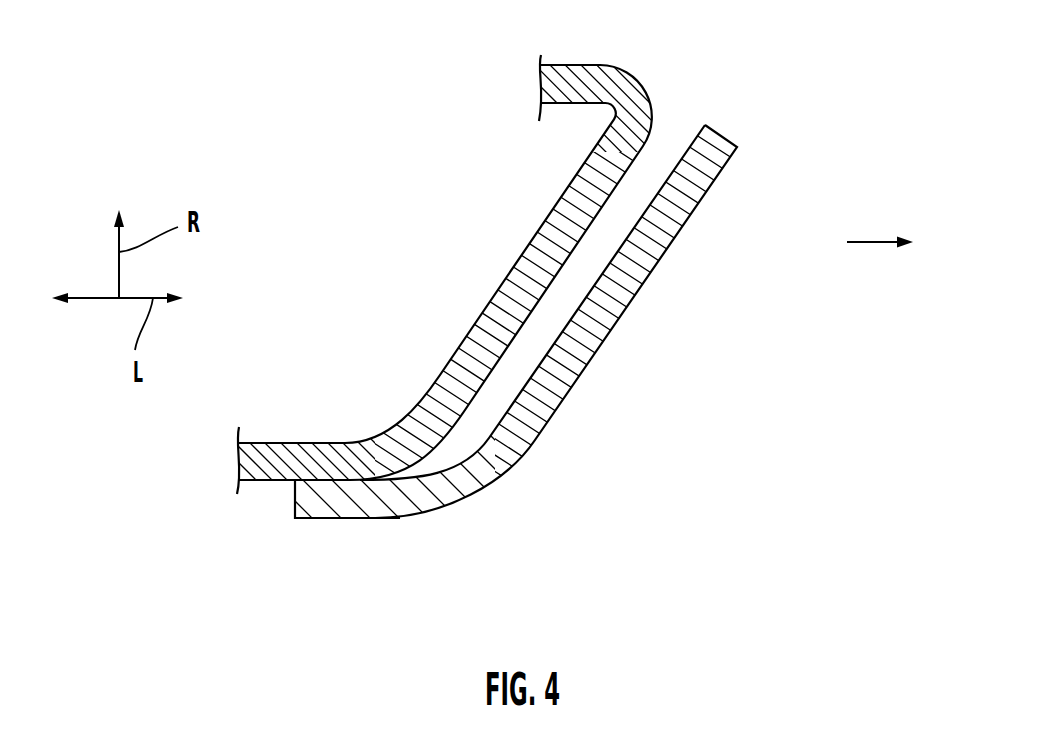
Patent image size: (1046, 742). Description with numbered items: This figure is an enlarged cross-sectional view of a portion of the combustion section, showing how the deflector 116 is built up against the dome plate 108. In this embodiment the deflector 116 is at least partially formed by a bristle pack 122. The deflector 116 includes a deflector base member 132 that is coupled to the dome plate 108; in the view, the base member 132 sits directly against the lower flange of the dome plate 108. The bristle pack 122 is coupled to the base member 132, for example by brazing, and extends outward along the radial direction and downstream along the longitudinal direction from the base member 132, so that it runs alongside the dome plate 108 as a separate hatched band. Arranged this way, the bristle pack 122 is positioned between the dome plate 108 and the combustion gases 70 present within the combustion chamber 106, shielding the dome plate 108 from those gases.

The combustion gases 70 is at (868, 242).
The combustion chamber 106 is at (797, 422).
The dome plate 108 is at (637, 78).
The deflector 116 is at (598, 458).
The bristle pack 122 is at (627, 307).
The deflector base member 132 is at (413, 518).